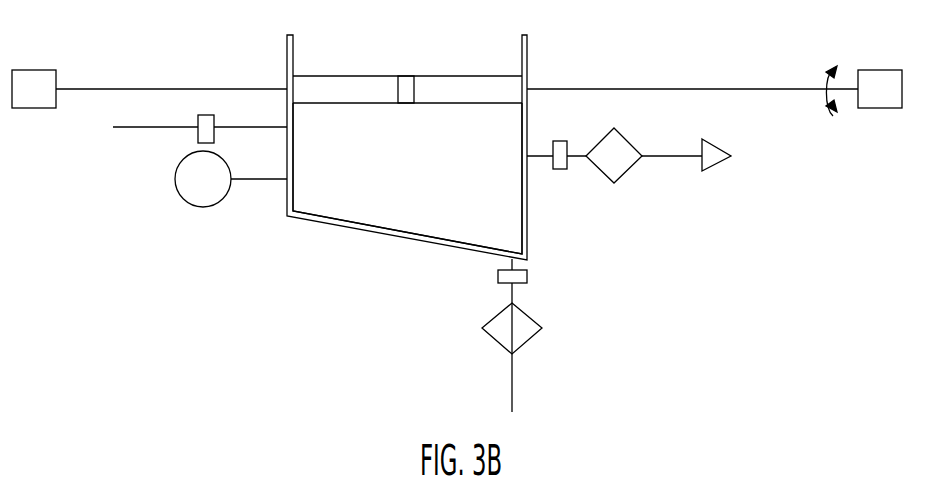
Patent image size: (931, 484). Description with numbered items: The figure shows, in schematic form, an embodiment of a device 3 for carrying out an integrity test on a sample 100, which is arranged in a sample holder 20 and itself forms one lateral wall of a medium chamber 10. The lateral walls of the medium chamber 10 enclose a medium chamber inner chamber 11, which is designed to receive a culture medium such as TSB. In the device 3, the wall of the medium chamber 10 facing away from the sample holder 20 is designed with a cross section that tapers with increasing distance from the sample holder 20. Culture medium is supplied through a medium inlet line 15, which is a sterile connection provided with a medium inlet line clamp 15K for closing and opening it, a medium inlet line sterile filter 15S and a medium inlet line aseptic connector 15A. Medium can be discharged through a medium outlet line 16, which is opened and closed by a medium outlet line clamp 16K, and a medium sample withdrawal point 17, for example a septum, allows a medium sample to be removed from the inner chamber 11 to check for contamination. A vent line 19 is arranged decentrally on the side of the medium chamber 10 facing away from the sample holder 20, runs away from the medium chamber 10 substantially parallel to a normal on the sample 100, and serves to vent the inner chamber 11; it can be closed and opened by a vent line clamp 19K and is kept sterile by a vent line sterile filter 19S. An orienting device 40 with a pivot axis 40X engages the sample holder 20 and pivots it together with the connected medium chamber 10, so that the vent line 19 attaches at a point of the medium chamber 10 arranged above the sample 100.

The device 3 is at (722, 302).
The medium chamber 10 is at (528, 220).
The medium chamber inner chamber 11 is at (418, 176).
The medium inlet line 15 is at (673, 157).
The medium inlet line aseptic connector 15A is at (729, 148).
The medium inlet line clamp 15K is at (559, 173).
The medium inlet line sterile filter 15S is at (624, 147).
The medium outlet line 16 is at (157, 130).
The medium outlet line clamp 16K is at (225, 120).
The medium sample withdrawal point 17 is at (207, 206).
The vent line 19 is at (512, 313).
The vent line clamp 19K is at (531, 285).
The vent line sterile filter 19S is at (502, 338).
The sample holder 20 is at (287, 83).
The orienting device 40 is at (892, 104).
The pivot axis 40X is at (757, 89).
The sample 100 is at (528, 80).